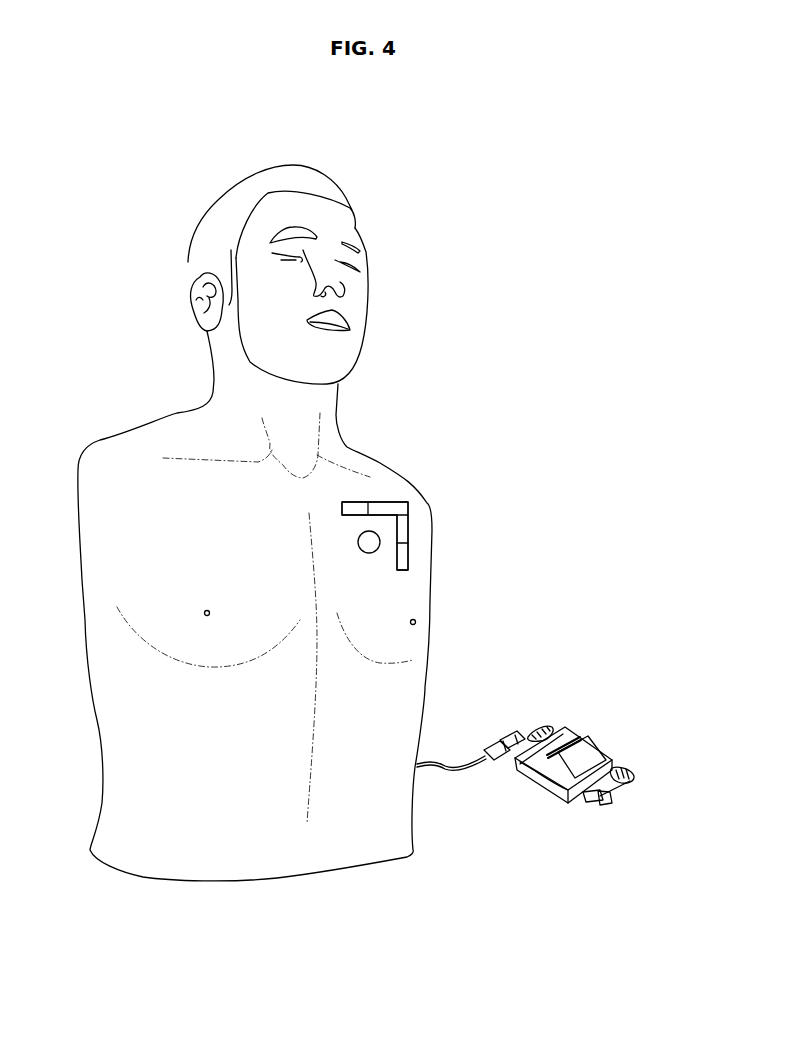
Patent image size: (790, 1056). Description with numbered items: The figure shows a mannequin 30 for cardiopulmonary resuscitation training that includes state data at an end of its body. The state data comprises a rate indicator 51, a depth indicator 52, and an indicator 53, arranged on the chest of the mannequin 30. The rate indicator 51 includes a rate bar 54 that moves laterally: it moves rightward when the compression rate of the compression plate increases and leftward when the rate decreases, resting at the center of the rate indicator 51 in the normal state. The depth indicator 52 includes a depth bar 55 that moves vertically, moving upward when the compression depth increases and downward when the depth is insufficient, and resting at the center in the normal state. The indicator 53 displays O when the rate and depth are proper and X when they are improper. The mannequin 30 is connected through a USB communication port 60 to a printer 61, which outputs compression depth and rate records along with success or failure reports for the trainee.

The mannequin 30 is at (318, 104).
The rate indicator 51 is at (390, 502).
The depth indicator 52 is at (410, 521).
The indicator 53 is at (371, 553).
The rate bar 54 is at (368, 490).
The depth bar 55 is at (416, 543).
The USB communication port 60 is at (458, 773).
The printer 61 is at (590, 738).